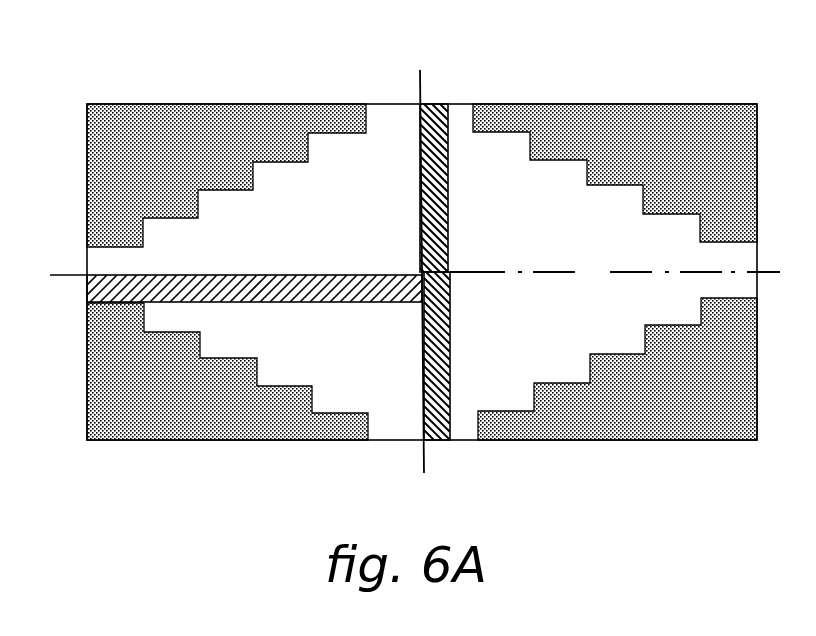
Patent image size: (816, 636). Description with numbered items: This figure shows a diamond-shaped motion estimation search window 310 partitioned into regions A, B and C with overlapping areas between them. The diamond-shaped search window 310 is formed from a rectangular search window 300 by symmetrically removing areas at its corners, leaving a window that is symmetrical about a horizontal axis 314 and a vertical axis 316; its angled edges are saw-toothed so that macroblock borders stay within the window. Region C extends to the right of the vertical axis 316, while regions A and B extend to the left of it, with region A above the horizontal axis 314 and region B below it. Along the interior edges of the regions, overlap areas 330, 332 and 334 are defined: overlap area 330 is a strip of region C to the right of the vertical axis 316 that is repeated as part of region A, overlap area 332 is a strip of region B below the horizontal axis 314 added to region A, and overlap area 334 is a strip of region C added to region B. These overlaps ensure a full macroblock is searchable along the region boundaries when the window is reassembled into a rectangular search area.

The rectangular search window 300 is at (603, 101).
The diamond-shaped search window 310 is at (537, 253).
The horizontal axis 314 is at (50, 275).
The vertical axis 316 is at (420, 78).
The overlap area 330 is at (437, 165).
The overlap area 332 is at (361, 274).
The overlap area 334 is at (450, 362).